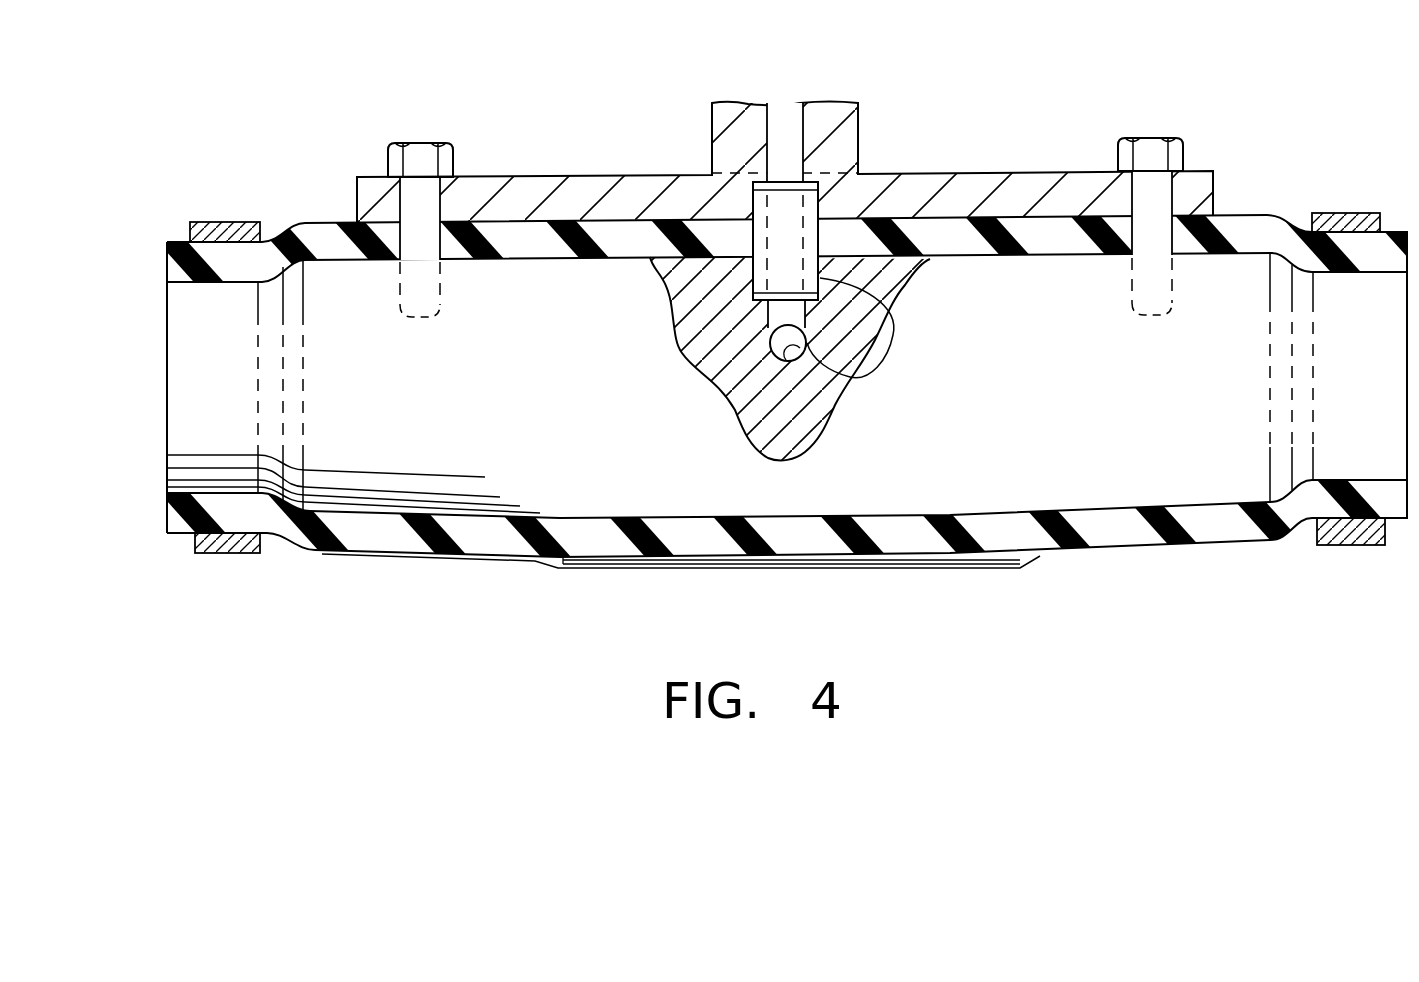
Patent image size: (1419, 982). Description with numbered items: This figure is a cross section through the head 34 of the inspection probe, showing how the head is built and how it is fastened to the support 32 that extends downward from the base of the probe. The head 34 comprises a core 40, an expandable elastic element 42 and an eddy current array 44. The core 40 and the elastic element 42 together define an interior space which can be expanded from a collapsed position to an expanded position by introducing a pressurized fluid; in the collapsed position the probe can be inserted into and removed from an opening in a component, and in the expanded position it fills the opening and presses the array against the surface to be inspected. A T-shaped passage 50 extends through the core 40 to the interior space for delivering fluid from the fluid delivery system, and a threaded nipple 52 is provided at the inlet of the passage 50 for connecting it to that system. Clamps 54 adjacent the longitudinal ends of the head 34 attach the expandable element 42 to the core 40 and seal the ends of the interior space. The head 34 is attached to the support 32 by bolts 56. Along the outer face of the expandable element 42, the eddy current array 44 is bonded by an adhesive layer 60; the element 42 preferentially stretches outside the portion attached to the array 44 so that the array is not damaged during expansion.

The support 32 is at (1033, 170).
The head 34 is at (373, 632).
The core 40 is at (167, 388).
The expandable elastic element 42 is at (167, 512).
The eddy current array 44 is at (625, 568).
The T-shaped passage 50 is at (853, 377).
The threaded nipple 52 is at (890, 313).
The clamps 54 is at (228, 553).
The bolts 56 is at (435, 143).
The adhesive layer 60 is at (703, 557).